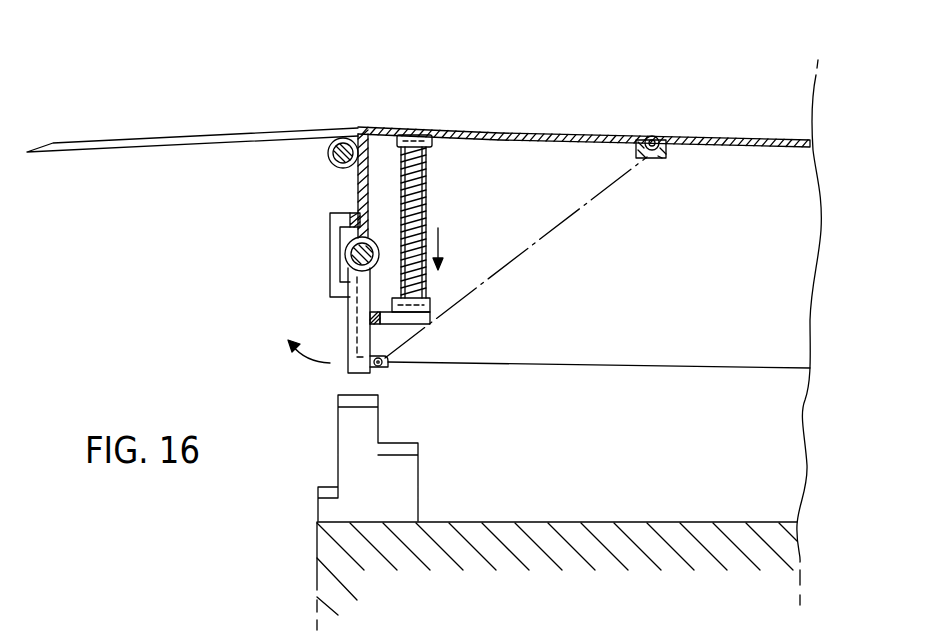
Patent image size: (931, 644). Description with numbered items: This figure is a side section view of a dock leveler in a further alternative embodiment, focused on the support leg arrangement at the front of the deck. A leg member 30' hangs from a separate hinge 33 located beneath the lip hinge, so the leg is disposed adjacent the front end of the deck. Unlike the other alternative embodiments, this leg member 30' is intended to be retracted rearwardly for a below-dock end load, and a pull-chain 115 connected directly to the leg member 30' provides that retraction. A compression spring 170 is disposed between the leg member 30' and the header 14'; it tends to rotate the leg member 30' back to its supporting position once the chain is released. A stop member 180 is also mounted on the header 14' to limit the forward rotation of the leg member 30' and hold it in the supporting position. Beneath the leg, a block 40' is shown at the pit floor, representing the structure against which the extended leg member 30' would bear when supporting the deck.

The header 14' is at (418, 182).
The stop member 180 is at (335, 243).
The hinge 33 is at (362, 254).
The leg member 30' is at (328, 320).
The compression spring 170 is at (427, 188).
The pivot axis line 115 is at (562, 225).
The stop block 40' is at (420, 458).